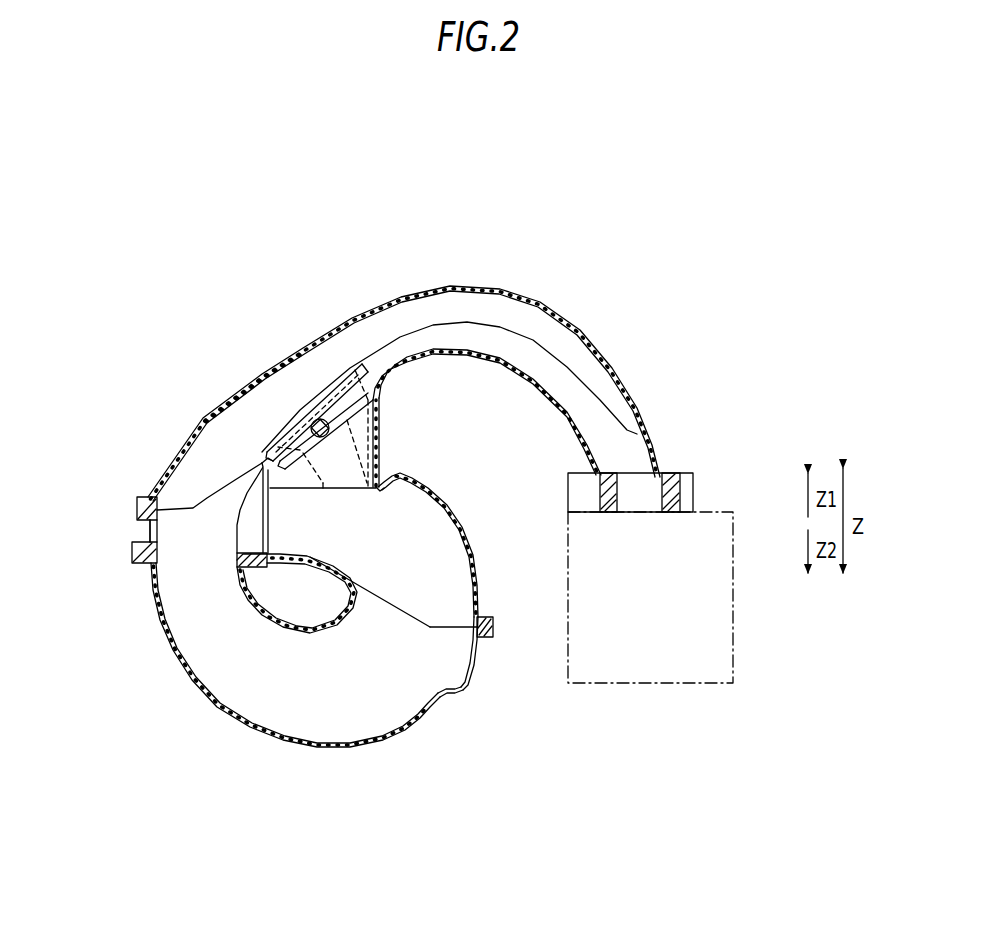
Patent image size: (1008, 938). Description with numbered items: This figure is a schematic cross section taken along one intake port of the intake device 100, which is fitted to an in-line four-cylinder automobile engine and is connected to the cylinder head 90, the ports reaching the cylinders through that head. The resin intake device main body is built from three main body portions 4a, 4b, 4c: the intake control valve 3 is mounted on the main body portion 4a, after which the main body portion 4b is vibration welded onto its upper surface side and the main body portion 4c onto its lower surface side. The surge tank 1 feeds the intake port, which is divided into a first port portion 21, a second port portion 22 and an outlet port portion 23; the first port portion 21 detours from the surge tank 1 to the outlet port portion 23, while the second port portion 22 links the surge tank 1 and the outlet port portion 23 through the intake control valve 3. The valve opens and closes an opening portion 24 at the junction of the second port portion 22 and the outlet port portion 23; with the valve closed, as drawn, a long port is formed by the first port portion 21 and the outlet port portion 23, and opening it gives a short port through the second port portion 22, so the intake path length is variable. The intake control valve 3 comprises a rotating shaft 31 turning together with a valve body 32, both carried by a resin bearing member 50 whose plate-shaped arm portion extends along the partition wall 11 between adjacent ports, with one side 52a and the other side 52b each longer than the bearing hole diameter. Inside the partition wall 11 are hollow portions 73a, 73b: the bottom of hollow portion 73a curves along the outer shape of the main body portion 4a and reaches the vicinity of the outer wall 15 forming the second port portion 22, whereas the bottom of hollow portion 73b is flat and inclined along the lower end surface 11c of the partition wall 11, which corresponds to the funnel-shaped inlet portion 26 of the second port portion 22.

The intake device 100 is at (648, 276).
The surge tank 1 is at (444, 574).
The intake control valve 3 is at (355, 462).
The main body portion 4a is at (454, 282).
The main body portion 4b is at (438, 491).
The main body portion 4c is at (418, 724).
The partition wall 11 is at (387, 487).
The lower end surface 11c is at (293, 487).
The outer wall 15 is at (384, 403).
The first port portion 21 is at (247, 664).
The second port portion 22 is at (337, 475).
The outlet port portion 23 is at (568, 392).
The opening portion 24 is at (373, 372).
The inlet portion 26 is at (328, 495).
The rotating shaft 31 is at (323, 443).
The valve body 32 is at (358, 408).
The bearing member 50 is at (317, 419).
The arm portion side 52a is at (342, 377).
The arm portion side 52b is at (282, 432).
The hollow portion 73a is at (365, 432).
The hollow portion 73b is at (294, 474).
The cylinder head 90 is at (648, 683).